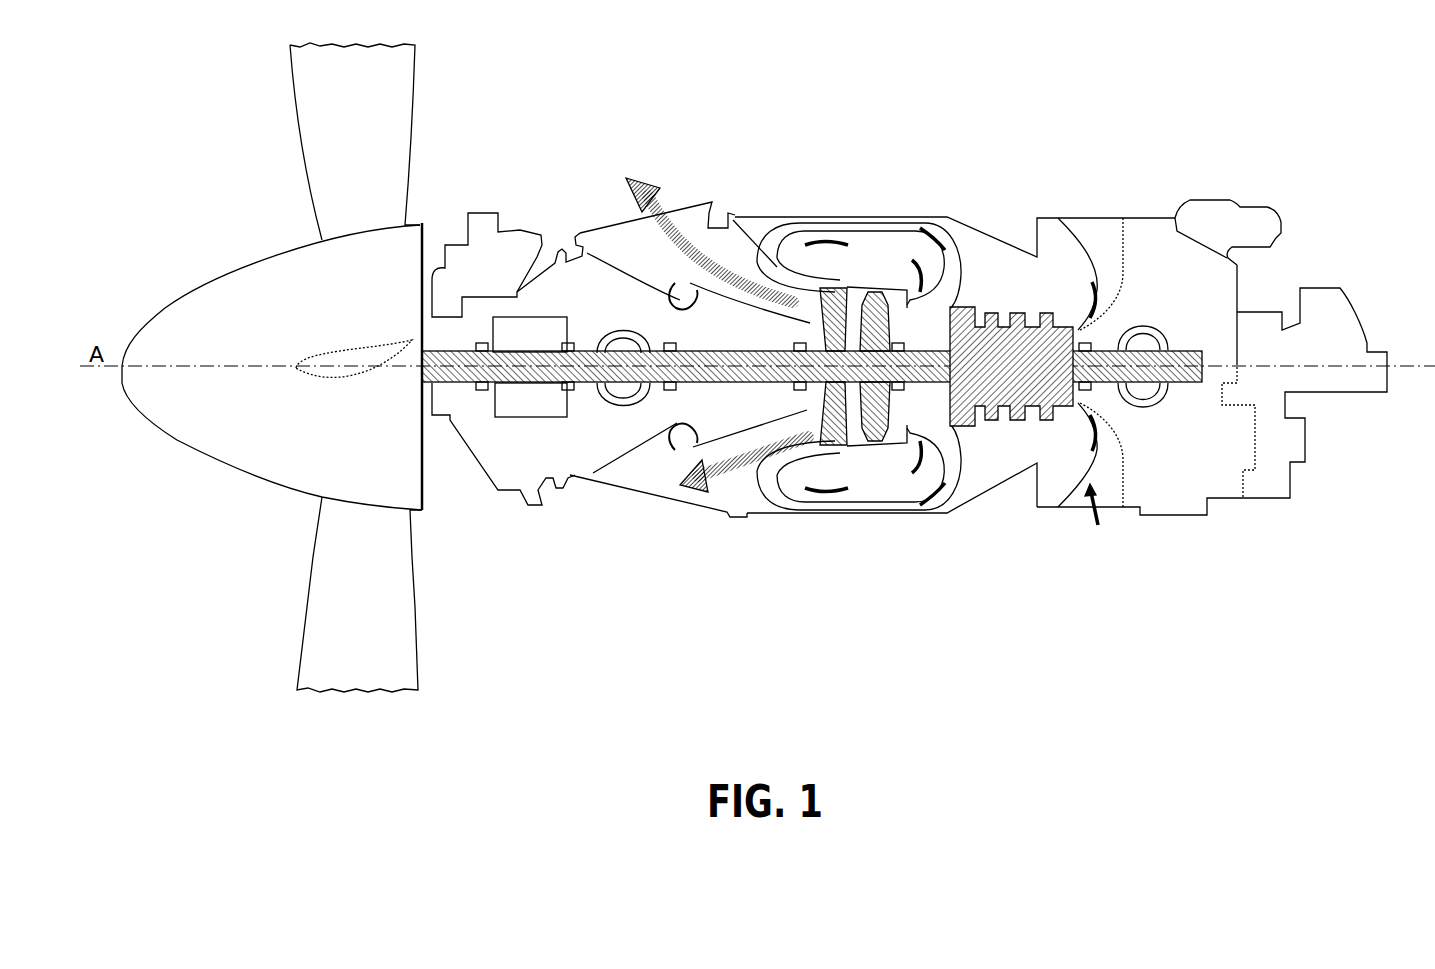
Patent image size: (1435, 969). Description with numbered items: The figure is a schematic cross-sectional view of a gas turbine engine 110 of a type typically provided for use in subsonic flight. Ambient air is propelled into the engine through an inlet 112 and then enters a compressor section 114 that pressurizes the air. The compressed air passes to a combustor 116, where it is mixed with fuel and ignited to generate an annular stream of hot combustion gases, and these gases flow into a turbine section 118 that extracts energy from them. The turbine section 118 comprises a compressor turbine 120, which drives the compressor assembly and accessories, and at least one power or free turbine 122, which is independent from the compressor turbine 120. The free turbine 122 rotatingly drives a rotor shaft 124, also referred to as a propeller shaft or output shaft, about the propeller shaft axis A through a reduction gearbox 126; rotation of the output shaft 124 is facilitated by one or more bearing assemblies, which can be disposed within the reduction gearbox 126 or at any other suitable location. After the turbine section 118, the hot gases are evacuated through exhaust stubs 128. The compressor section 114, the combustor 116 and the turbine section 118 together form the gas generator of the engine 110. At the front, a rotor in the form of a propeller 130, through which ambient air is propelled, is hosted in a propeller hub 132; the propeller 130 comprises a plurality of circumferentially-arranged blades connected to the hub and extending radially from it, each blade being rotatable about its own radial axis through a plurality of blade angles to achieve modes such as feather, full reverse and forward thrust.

The gas turbine engine 110 is at (770, 122).
The inlet 112 is at (1110, 190).
The compressor section 114 is at (992, 257).
The combustor 116 is at (885, 247).
The turbine section 118 is at (860, 380).
The compressor turbine 120 is at (906, 378).
The power or free turbine 122 is at (828, 380).
The rotor shaft 124 is at (550, 405).
The reduction gearbox 126 is at (532, 412).
The exhaust stubs 128 is at (627, 196).
The propeller 130 is at (325, 118).
The propeller hub 132 is at (245, 283).